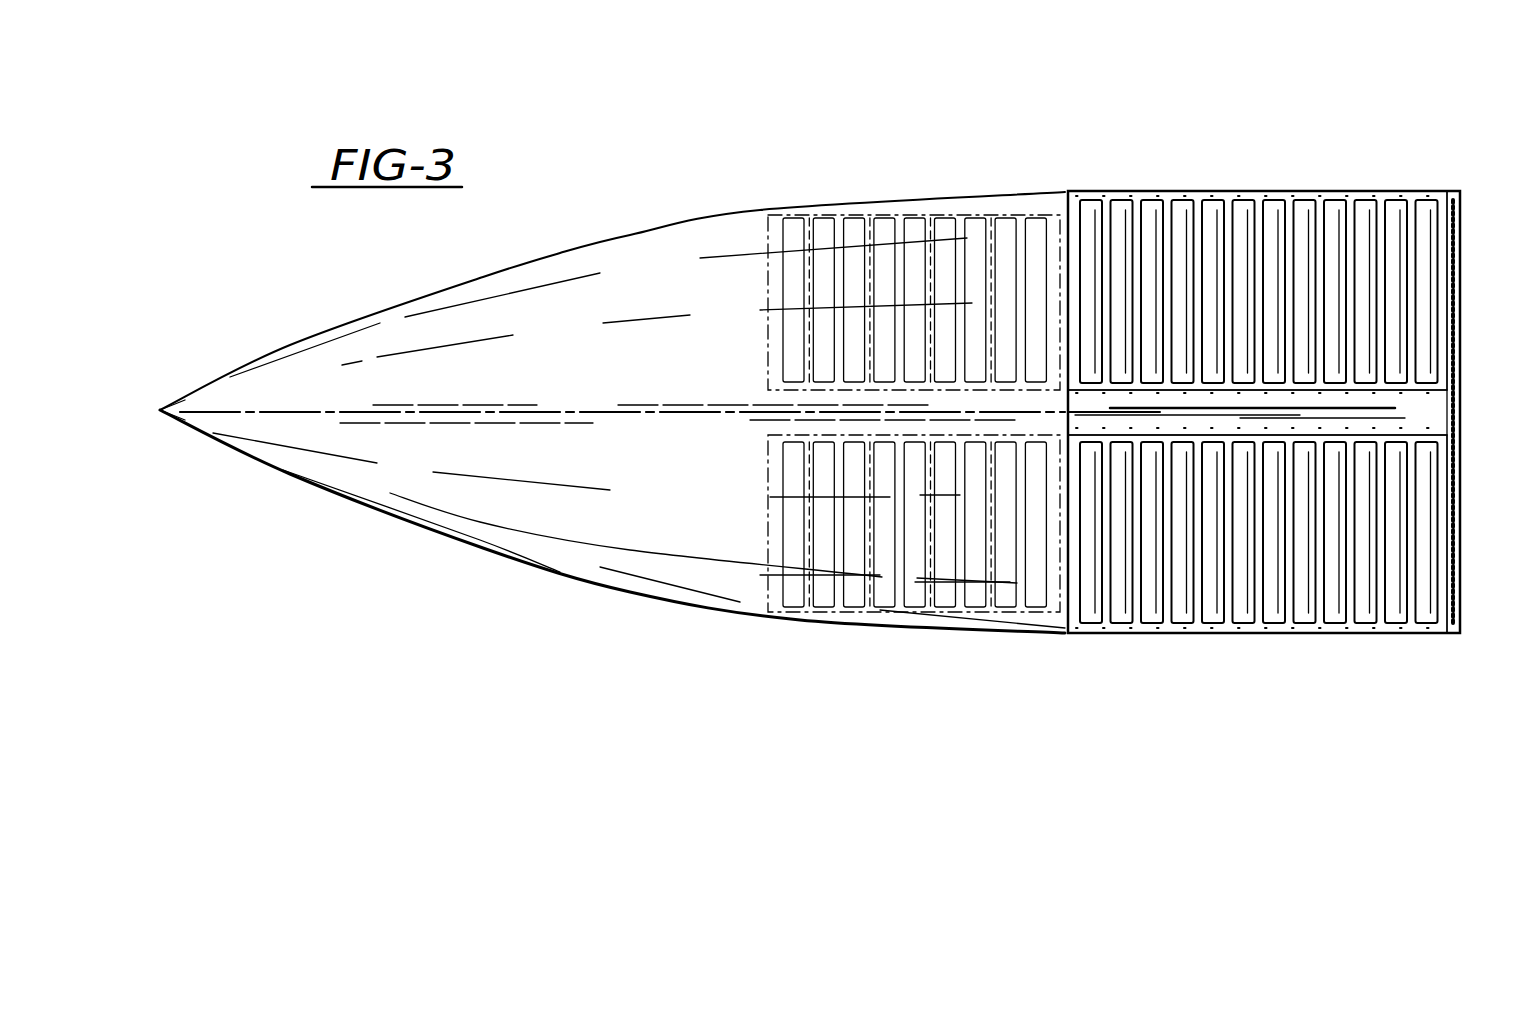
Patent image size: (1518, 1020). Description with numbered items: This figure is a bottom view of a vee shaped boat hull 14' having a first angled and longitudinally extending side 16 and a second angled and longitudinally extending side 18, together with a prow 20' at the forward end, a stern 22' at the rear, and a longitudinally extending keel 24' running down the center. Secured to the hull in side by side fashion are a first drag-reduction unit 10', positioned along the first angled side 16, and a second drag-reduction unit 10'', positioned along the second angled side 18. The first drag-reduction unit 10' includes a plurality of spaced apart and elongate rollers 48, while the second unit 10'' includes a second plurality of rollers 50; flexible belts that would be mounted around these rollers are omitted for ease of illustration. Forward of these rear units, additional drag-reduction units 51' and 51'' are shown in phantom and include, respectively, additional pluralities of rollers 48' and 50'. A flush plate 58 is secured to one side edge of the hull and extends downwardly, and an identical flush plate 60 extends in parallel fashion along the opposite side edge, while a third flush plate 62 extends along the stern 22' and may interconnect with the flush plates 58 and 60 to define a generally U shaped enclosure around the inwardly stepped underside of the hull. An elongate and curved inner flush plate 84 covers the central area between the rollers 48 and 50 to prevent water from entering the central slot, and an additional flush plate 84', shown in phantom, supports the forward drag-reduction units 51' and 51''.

The first drag-reduction unit 10' is at (787, 348).
The second drag-reduction unit 10'' is at (1264, 458).
The boat hull 14' is at (424, 262).
The first angled and longitudinally extending side 16 is at (557, 345).
The second angled and longitudinally extending side 18 is at (557, 533).
The prow 20' is at (186, 354).
The stern 22' is at (1285, 433).
The keel 24' is at (622, 453).
The rollers 48 is at (1259, 238).
The rollers 48' is at (903, 254).
The rollers 50 is at (1243, 588).
The rollers 50' is at (896, 581).
The additional drag-reduction unit 51' is at (940, 242).
The additional drag-reduction unit 51'' is at (918, 576).
The flush plate 58 is at (1228, 634).
The flush plate 60 is at (1232, 191).
The third flush plate 62 is at (1462, 350).
The inner flush plate 84 is at (1146, 454).
The additional flush plate 84' is at (865, 509).